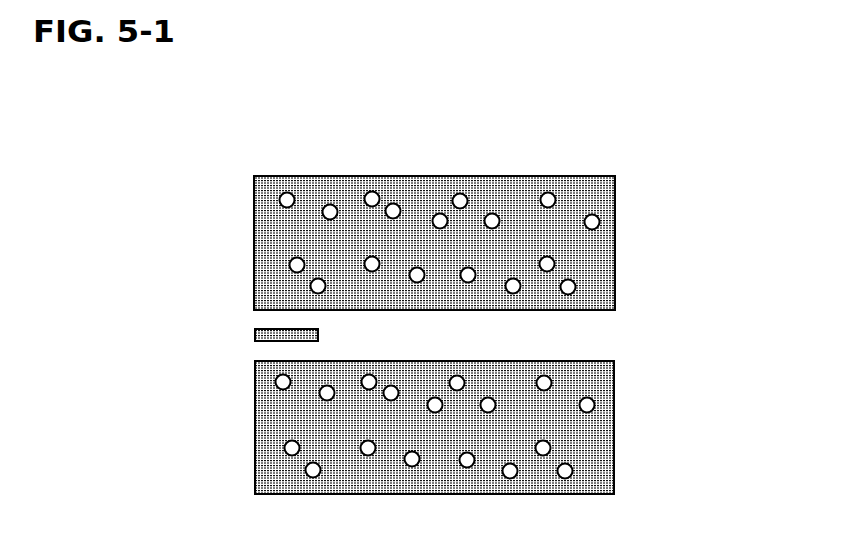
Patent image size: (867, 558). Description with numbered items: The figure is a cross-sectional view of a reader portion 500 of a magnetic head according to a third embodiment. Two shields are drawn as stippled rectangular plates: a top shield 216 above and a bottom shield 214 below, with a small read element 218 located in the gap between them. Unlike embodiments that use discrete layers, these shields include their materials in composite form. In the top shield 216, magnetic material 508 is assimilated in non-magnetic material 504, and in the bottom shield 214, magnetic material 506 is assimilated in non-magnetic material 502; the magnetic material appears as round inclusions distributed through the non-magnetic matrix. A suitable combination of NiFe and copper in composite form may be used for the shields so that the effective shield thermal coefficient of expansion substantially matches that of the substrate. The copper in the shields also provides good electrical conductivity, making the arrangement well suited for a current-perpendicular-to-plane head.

The reader portion 500 is at (268, 120).
The top shield 216 is at (642, 205).
The bottom shield 214 is at (652, 463).
The read element 218 is at (255, 336).
The non-magnetic material 504 is at (598, 272).
The non-magnetic material 502 is at (605, 380).
The magnetic material 508 is at (550, 198).
The magnetic material 506 is at (594, 403).